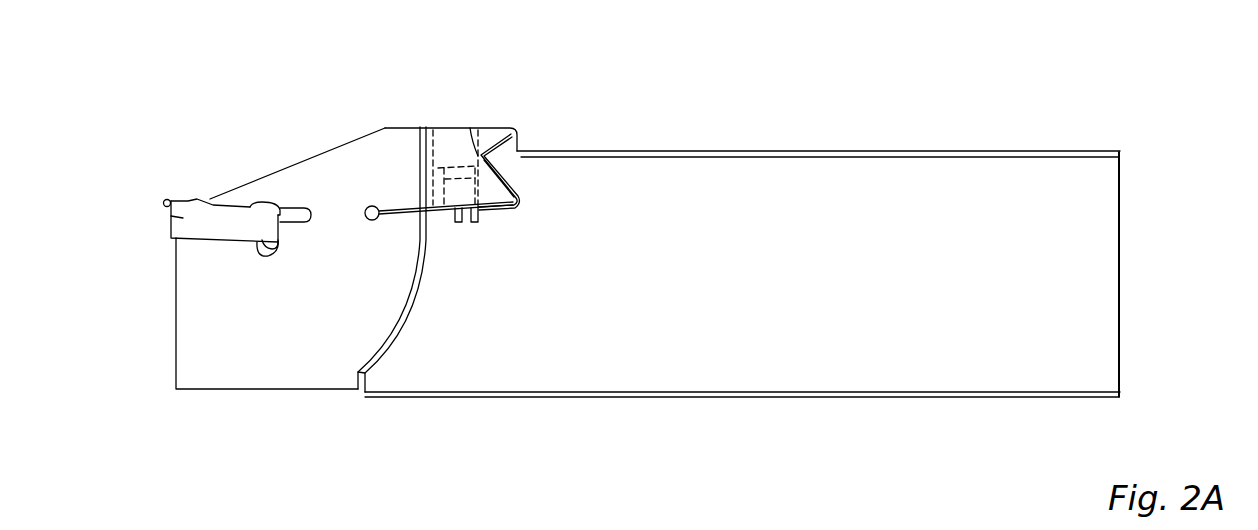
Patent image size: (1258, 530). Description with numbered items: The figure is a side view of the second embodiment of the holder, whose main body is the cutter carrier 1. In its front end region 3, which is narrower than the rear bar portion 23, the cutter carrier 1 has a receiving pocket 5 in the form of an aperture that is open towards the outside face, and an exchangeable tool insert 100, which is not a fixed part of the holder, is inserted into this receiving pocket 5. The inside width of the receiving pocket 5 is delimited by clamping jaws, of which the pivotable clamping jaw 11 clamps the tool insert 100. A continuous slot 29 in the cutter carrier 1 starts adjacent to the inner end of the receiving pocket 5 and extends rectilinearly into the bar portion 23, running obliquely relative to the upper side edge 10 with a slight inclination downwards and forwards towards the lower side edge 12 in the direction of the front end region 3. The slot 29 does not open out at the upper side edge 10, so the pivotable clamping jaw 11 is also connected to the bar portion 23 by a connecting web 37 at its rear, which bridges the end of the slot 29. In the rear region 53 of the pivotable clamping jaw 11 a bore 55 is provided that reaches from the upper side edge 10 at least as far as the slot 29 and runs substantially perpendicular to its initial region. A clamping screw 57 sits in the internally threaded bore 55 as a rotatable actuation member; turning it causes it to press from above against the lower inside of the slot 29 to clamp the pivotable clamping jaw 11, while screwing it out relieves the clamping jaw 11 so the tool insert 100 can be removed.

The cutter carrier 1 is at (648, 278).
The front end region 3 is at (242, 372).
The receiving pocket 5 is at (183, 187).
The upper side edge 10 is at (883, 150).
The pivotable clamping jaw 11 is at (278, 177).
The lower side edge 12 is at (867, 396).
The bar portion 23 is at (620, 373).
The slot 29 is at (400, 210).
The connecting web 37 is at (495, 136).
The rear region of the pivotable clamping jaw 53 is at (423, 157).
The bore 55 is at (457, 140).
The clamping screw 57 is at (480, 183).
The tool insert 100 is at (183, 219).